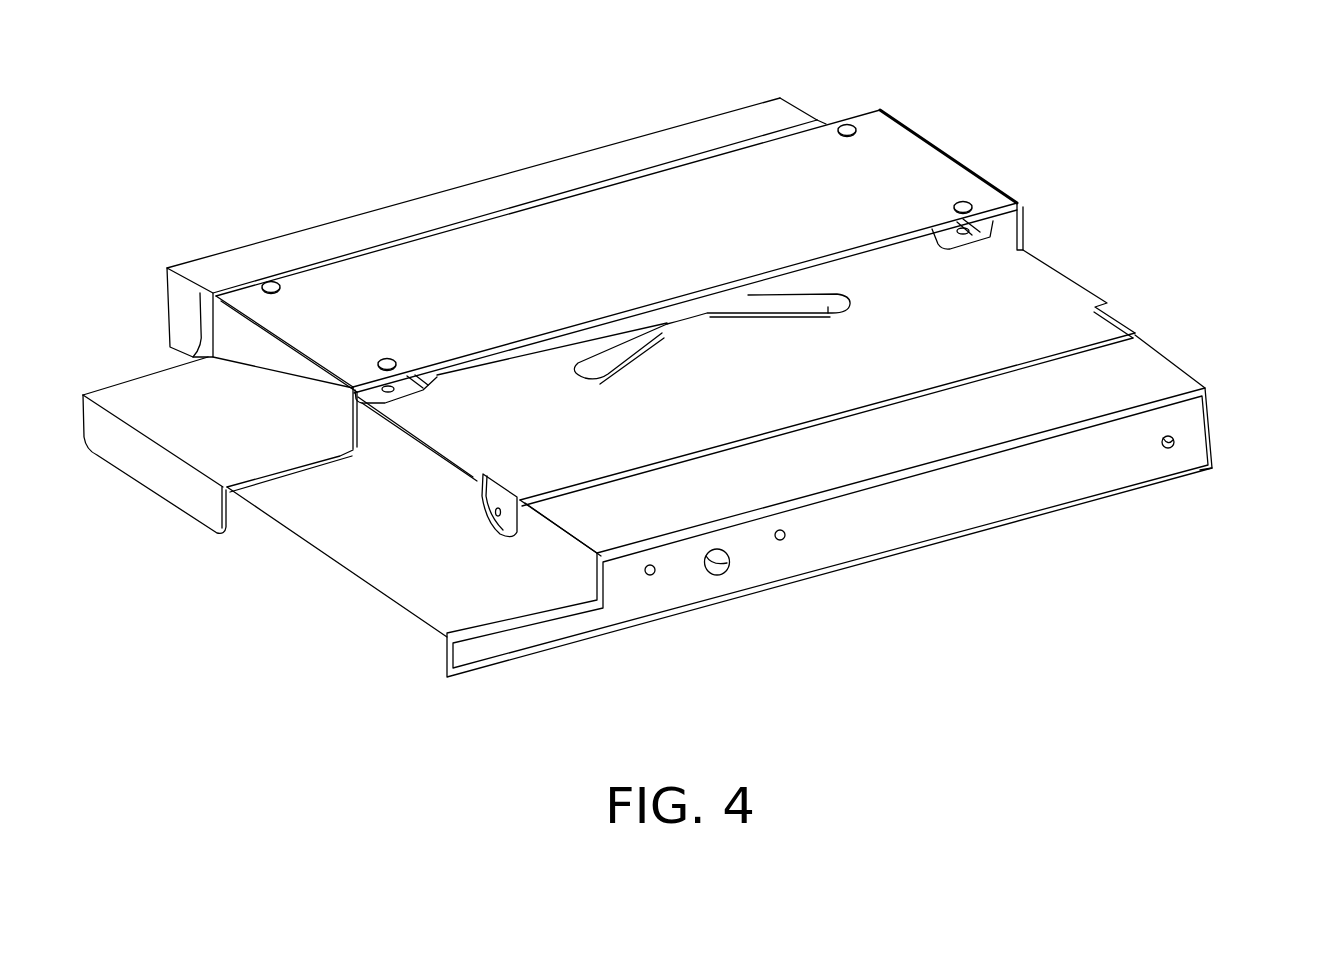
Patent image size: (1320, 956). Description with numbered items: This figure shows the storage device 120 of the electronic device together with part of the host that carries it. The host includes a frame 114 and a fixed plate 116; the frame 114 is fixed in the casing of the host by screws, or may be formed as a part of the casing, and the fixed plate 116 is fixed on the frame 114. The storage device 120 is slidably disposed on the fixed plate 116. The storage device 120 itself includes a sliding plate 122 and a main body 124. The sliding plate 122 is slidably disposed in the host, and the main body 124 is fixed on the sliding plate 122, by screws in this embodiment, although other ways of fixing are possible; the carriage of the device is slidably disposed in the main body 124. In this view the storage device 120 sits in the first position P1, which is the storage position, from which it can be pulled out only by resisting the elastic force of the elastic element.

The frame 114 is at (893, 135).
The fixed plate 116 is at (902, 247).
The first position P1 is at (999, 181).
The storage device 120 is at (871, 440).
The sliding plate 122 is at (1033, 293).
The main body 124 is at (845, 486).